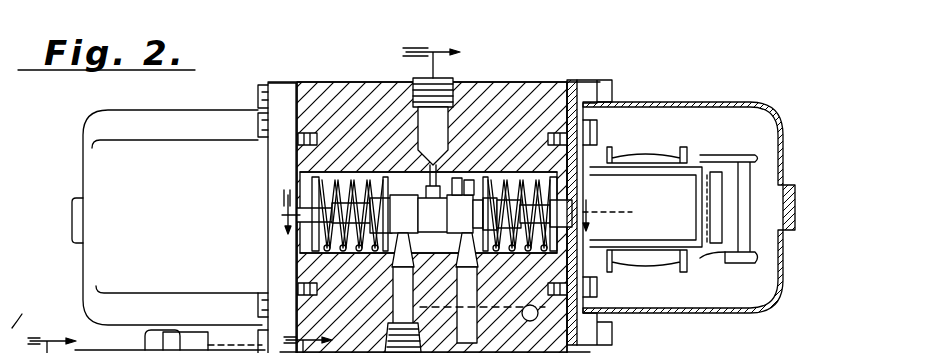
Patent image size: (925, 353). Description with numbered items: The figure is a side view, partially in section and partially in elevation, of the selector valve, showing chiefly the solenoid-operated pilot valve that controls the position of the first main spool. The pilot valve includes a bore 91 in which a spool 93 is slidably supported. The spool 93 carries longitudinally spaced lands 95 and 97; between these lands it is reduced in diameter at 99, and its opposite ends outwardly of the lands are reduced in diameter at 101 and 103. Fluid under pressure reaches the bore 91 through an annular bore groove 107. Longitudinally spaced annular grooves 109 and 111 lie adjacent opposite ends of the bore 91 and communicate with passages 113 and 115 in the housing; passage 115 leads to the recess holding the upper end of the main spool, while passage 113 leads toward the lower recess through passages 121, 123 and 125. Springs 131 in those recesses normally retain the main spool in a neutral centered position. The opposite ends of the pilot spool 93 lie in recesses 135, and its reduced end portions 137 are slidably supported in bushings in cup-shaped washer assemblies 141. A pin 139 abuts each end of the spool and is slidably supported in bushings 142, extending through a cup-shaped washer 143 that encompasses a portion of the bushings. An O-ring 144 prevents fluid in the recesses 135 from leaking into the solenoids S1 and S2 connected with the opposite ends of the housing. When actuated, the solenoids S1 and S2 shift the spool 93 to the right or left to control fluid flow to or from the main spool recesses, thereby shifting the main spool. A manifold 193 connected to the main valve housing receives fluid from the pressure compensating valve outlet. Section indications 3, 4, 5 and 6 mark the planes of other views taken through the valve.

The section line 3- 3 is at (431, 54).
The section line 4- 4 is at (448, 212).
The section line 5- 5 is at (52, 331).
The section line 6- 6 is at (308, 333).
The bore 91 is at (456, 178).
The spool 93 is at (470, 188).
The land 95 is at (420, 180).
The land 97 is at (509, 214).
The reduced diameter portion 99 is at (357, 214).
The reduced diameter end portion 101 is at (389, 184).
The reduced diameter end portion 103 is at (494, 175).
The annular bore groove 107 is at (416, 272).
The annular groove 109 is at (415, 194).
The annular groove 111 is at (480, 273).
The passage 113 is at (392, 272).
The passage 115 is at (480, 298).
The passage 121 is at (392, 323).
The passage 123 is at (412, 312).
The passage 125 is at (580, 308).
The spring 131 is at (524, 319).
The recess 135 is at (344, 170).
The reduced end portion 137 is at (367, 178).
The pin 139 is at (296, 232).
The cup-shaped washer assembly 141 is at (516, 177).
The bushing 142 is at (296, 250).
The cup-shaped washer 143 is at (536, 82).
The O-ring 144 is at (296, 263).
The manifold 193 is at (28, 317).
The solenoid S1 is at (210, 222).
The solenoid S2 is at (678, 193).